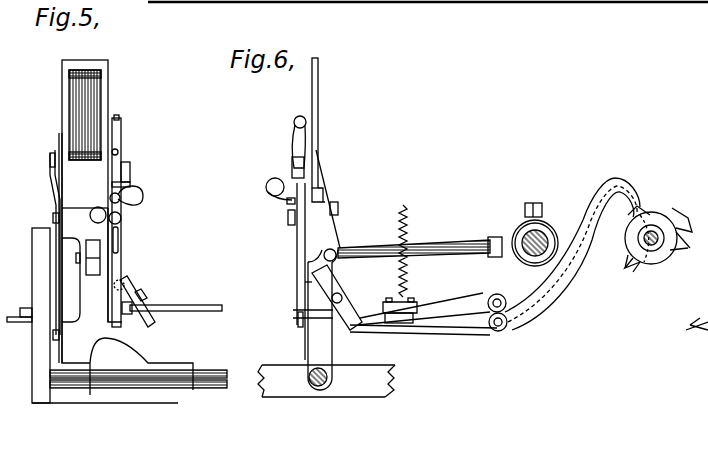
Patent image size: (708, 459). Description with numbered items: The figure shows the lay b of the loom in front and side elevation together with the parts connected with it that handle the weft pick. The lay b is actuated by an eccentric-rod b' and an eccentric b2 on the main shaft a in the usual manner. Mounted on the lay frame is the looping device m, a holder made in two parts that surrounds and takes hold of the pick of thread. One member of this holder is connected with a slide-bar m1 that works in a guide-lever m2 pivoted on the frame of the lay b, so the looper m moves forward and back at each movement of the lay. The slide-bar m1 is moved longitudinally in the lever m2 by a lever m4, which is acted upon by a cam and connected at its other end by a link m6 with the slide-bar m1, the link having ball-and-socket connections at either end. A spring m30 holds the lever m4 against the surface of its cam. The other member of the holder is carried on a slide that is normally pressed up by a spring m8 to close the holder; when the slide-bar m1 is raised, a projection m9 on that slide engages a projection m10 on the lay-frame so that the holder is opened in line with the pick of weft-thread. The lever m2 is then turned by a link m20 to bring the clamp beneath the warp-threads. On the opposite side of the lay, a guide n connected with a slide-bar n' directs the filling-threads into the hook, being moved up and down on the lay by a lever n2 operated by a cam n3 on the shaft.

In FIG. 5, the lay b is at (72, 134).
In FIG. 6, the lay b is at (326, 153).
In FIG. 5, the guide n is at (46, 245).
In FIG. 6, the guide n is at (657, 224).
In FIG. 5, the slide-bar n' is at (43, 245).
In FIG. 6, the slide-bar n' is at (673, 231).
In FIG. 5, the lever n2 is at (22, 312).
In FIG. 6, the lever n2 is at (602, 178).
In FIG. 6, the cam n3 is at (628, 272).
In FIG. 5, the looping device m is at (128, 219).
In FIG. 6, the looping device m is at (293, 121).
In FIG. 5, the slide-bar m1 is at (120, 258).
In FIG. 6, the slide-bar m1 is at (290, 314).
In FIG. 5, the guide-lever m2 is at (110, 285).
In FIG. 6, the guide-lever m2 is at (297, 250).
In FIG. 6, the lever m4 is at (462, 306).
In FIG. 5, the link m6 is at (132, 290).
In FIG. 6, the link m6 is at (342, 298).
In FIG. 5, the spring m8 is at (144, 198).
In FIG. 6, the spring m8 is at (266, 185).
In FIG. 5, the projection m9 is at (131, 184).
In FIG. 6, the projection m9 is at (287, 203).
In FIG. 5, the projection m10 is at (130, 172).
In FIG. 6, the projection m10 is at (292, 164).
In FIG. 5, the link m20 is at (186, 306).
In FIG. 6, the spring m30 is at (398, 228).
In FIG. 6, the eccentric-rod b' is at (420, 237).
In FIG. 6, the eccentric b2 is at (548, 218).
In FIG. 6, the main shaft a is at (524, 238).